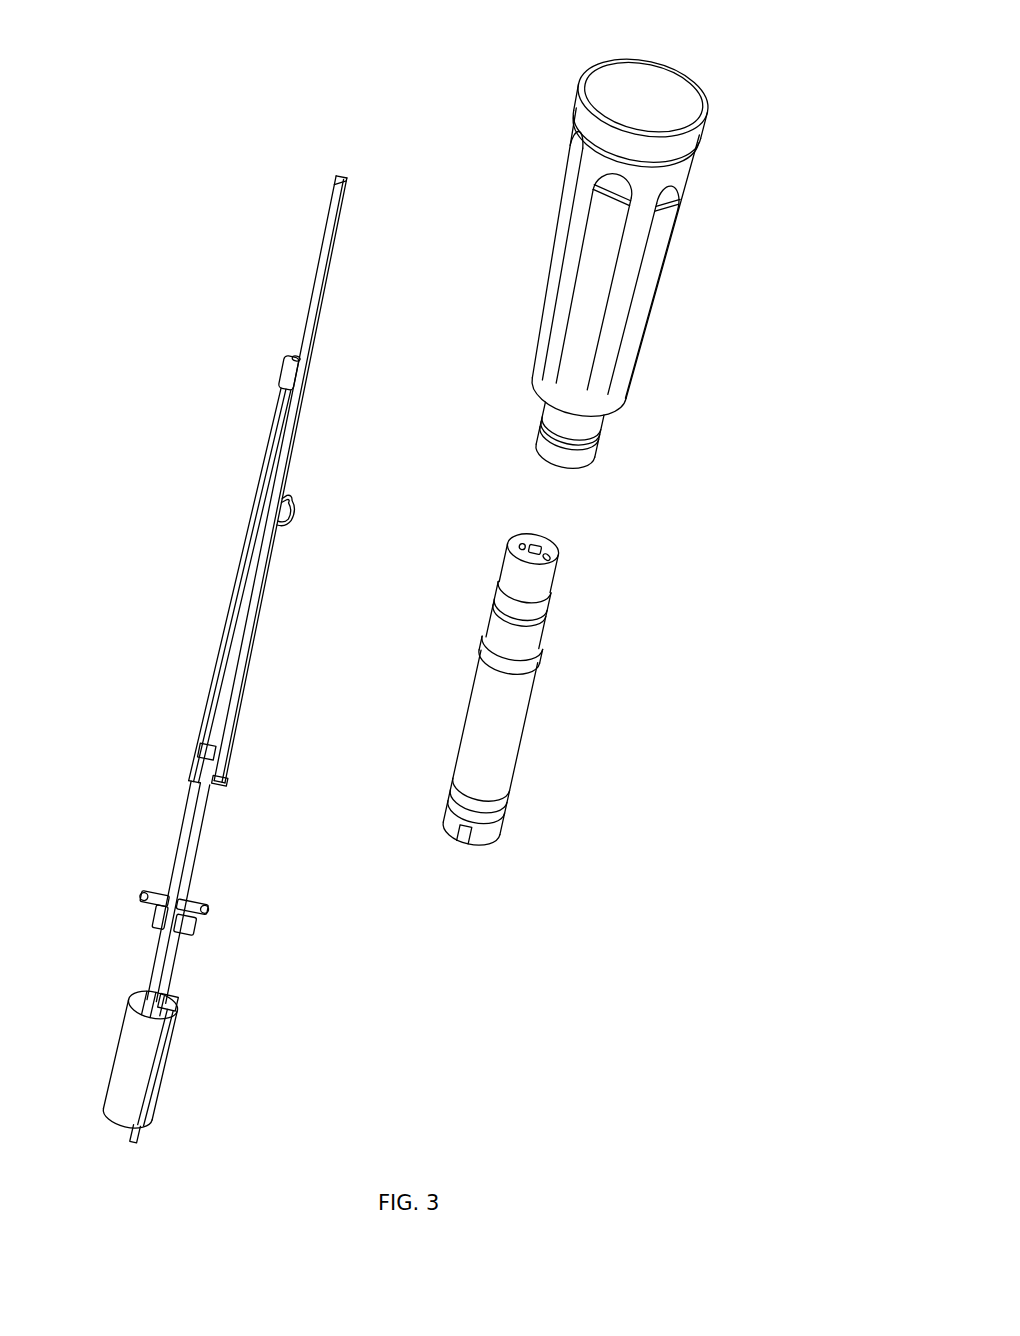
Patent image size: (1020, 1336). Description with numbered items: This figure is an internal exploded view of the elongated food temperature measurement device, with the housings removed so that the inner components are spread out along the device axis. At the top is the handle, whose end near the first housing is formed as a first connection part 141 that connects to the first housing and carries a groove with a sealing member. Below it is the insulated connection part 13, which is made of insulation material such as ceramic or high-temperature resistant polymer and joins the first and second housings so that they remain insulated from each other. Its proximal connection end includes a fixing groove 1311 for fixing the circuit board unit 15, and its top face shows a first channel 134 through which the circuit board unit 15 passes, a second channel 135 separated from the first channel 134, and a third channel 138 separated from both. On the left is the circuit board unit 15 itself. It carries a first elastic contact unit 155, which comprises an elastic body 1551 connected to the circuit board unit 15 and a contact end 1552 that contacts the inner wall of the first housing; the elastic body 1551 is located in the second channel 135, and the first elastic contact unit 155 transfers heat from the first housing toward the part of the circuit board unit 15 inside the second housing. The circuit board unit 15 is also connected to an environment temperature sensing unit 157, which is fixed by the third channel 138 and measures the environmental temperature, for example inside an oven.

The insulated connection part 13 is at (584, 684).
The fixing groove 1311 is at (462, 840).
The first channel 134 is at (557, 550).
The second channel 135 is at (558, 558).
The third channel 138 is at (510, 540).
The first connection part 141 is at (583, 427).
The circuit board unit 15 is at (273, 624).
The first elastic contact unit 155 is at (320, 586).
The elastic body 1551 is at (262, 665).
The contact end 1552 is at (303, 520).
The environment temperature sensing unit 157 is at (280, 377).